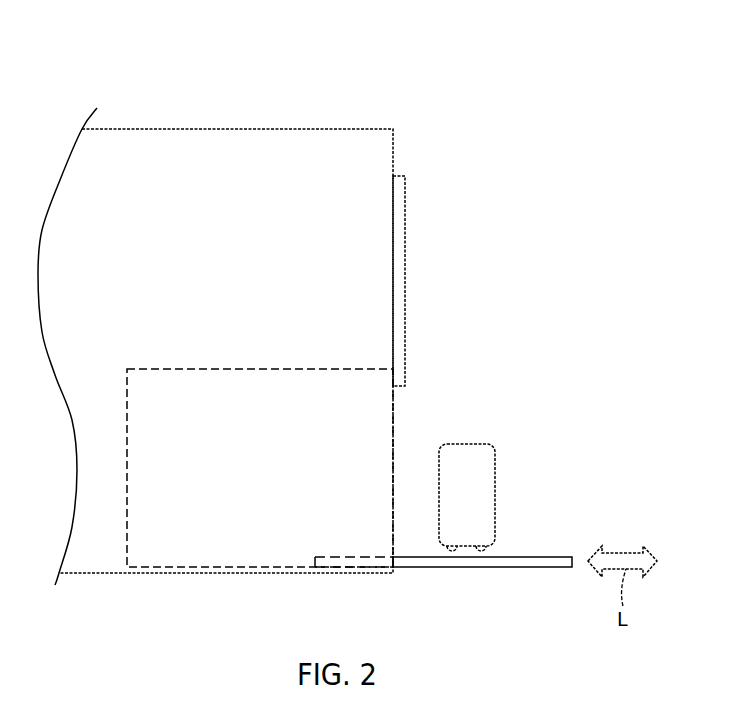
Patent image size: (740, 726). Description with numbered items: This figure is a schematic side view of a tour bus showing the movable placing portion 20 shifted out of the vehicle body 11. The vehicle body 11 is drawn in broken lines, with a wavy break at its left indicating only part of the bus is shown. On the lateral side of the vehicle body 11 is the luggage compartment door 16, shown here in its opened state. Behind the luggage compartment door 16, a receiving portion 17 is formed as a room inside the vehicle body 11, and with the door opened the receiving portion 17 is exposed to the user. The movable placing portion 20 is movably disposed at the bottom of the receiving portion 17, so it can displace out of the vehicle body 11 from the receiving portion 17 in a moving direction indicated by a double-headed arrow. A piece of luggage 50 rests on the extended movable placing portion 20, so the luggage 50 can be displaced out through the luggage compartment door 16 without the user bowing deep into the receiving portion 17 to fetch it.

The vehicle body 11 is at (255, 128).
The luggage compartment door 16 is at (397, 265).
The receiving portion 17 is at (274, 388).
The movable placing portion 20 is at (537, 557).
The luggage 50 is at (477, 448).